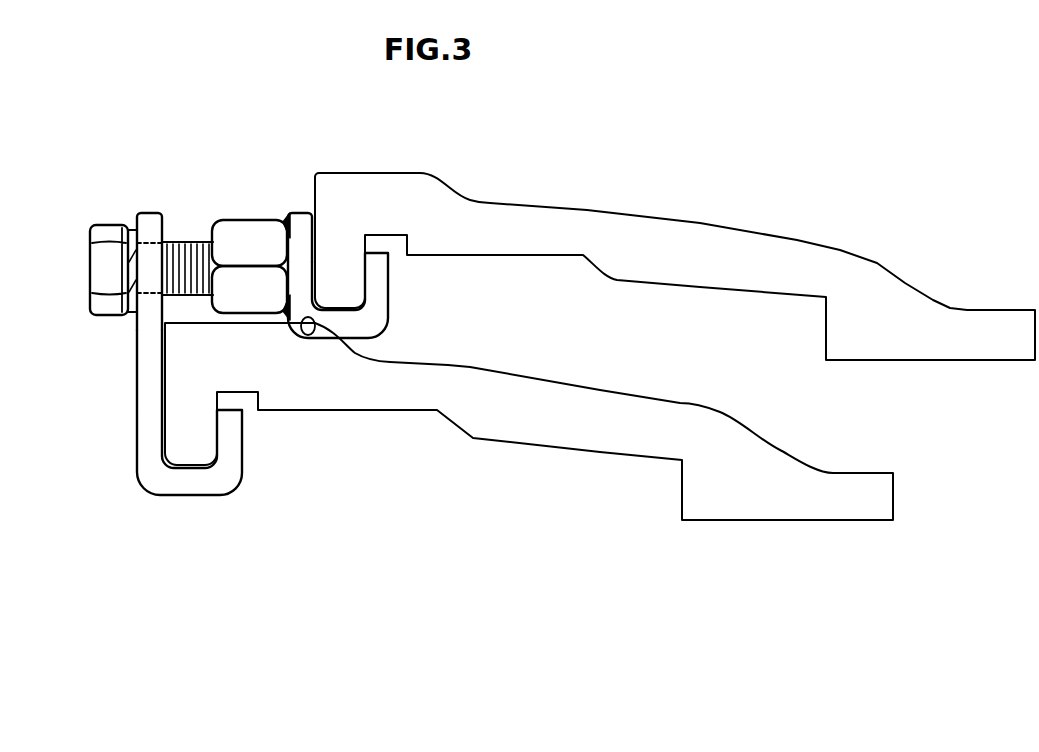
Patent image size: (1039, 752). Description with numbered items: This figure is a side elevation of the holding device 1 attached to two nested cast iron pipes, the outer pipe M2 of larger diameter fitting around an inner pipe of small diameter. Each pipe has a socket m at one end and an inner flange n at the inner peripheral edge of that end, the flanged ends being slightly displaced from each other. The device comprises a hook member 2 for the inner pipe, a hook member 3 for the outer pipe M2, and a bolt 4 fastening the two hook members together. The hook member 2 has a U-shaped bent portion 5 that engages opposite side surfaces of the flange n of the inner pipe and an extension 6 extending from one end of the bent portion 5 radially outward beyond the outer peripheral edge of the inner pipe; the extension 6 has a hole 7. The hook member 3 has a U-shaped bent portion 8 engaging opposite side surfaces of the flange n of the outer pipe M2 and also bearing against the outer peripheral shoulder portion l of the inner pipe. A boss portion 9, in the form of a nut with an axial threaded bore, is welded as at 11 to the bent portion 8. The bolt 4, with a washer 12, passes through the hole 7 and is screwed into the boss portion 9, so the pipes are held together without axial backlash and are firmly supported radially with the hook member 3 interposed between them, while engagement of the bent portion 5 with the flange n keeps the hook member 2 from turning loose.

The holding device 1 is at (178, 158).
The hook member 2 is at (133, 376).
The hook member 3 is at (304, 224).
The bolt 4 is at (100, 267).
The U-shaped bent portion 5 is at (197, 487).
The extension 6 is at (137, 214).
The hole 7 is at (152, 233).
The U-shaped bent portion 8 is at (372, 318).
The boss portion 9 is at (241, 232).
The weld 11 is at (290, 228).
The washer 12 is at (104, 222).
The socket m is at (637, 230).
The inner flange n is at (354, 284).
The outer peripheral shoulder portion l is at (306, 338).
The outer pipe M2 is at (913, 322).